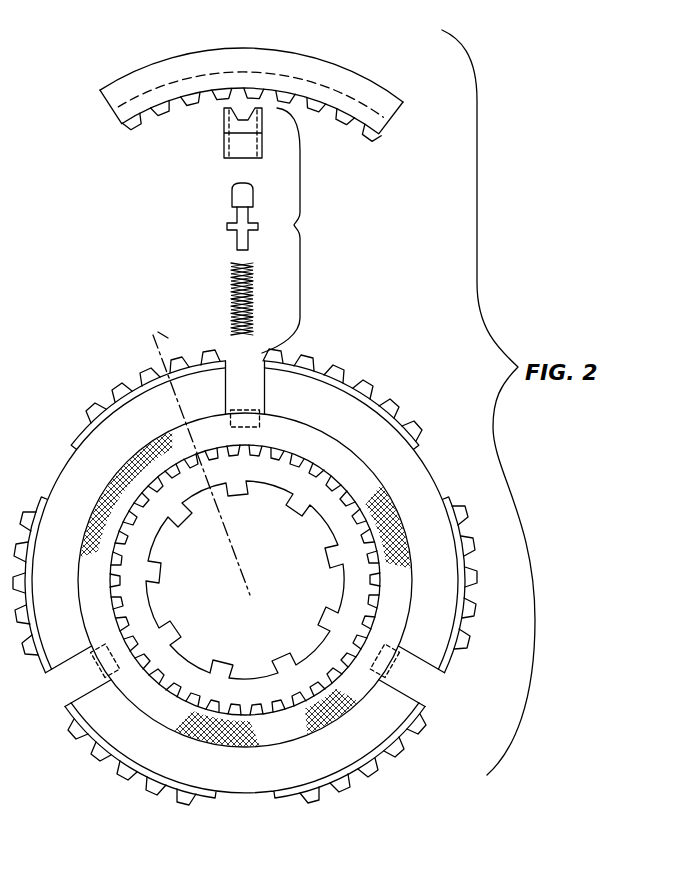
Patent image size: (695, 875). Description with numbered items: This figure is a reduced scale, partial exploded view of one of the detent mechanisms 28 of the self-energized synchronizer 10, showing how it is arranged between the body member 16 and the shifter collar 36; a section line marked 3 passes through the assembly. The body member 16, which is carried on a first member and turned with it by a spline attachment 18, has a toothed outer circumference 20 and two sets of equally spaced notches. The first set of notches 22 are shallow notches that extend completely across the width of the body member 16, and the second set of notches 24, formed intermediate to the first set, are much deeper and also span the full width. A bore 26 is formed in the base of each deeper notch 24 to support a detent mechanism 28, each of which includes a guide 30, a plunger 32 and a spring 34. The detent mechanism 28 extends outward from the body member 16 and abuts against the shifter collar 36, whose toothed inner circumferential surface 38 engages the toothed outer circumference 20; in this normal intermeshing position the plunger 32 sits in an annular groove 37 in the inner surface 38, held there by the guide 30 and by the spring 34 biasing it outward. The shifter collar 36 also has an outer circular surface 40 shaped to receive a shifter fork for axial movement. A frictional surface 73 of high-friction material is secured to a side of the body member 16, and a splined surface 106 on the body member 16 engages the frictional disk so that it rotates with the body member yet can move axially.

The self-energized synchronizer 10 is at (381, 326).
The body member 16 is at (386, 450).
The spline attachment 18 is at (304, 516).
The toothed outer circumference 20 is at (397, 402).
The first set of notches 22 is at (70, 454).
The second set of notches 24 is at (289, 341).
The bore 26 is at (233, 410).
The detent mechanism 28 is at (301, 230).
The guide 30 is at (225, 123).
The plunger 32 is at (232, 196).
The spring 34 is at (230, 268).
The shifter collar 36 is at (368, 74).
The annular groove 37 is at (197, 84).
The toothed inner circumferential surface 38 is at (345, 127).
The outer circular surface 40 is at (305, 56).
The frictional surface 73 is at (395, 593).
The splined surface 106 is at (280, 448).
The section line 3- 3 is at (146, 345).